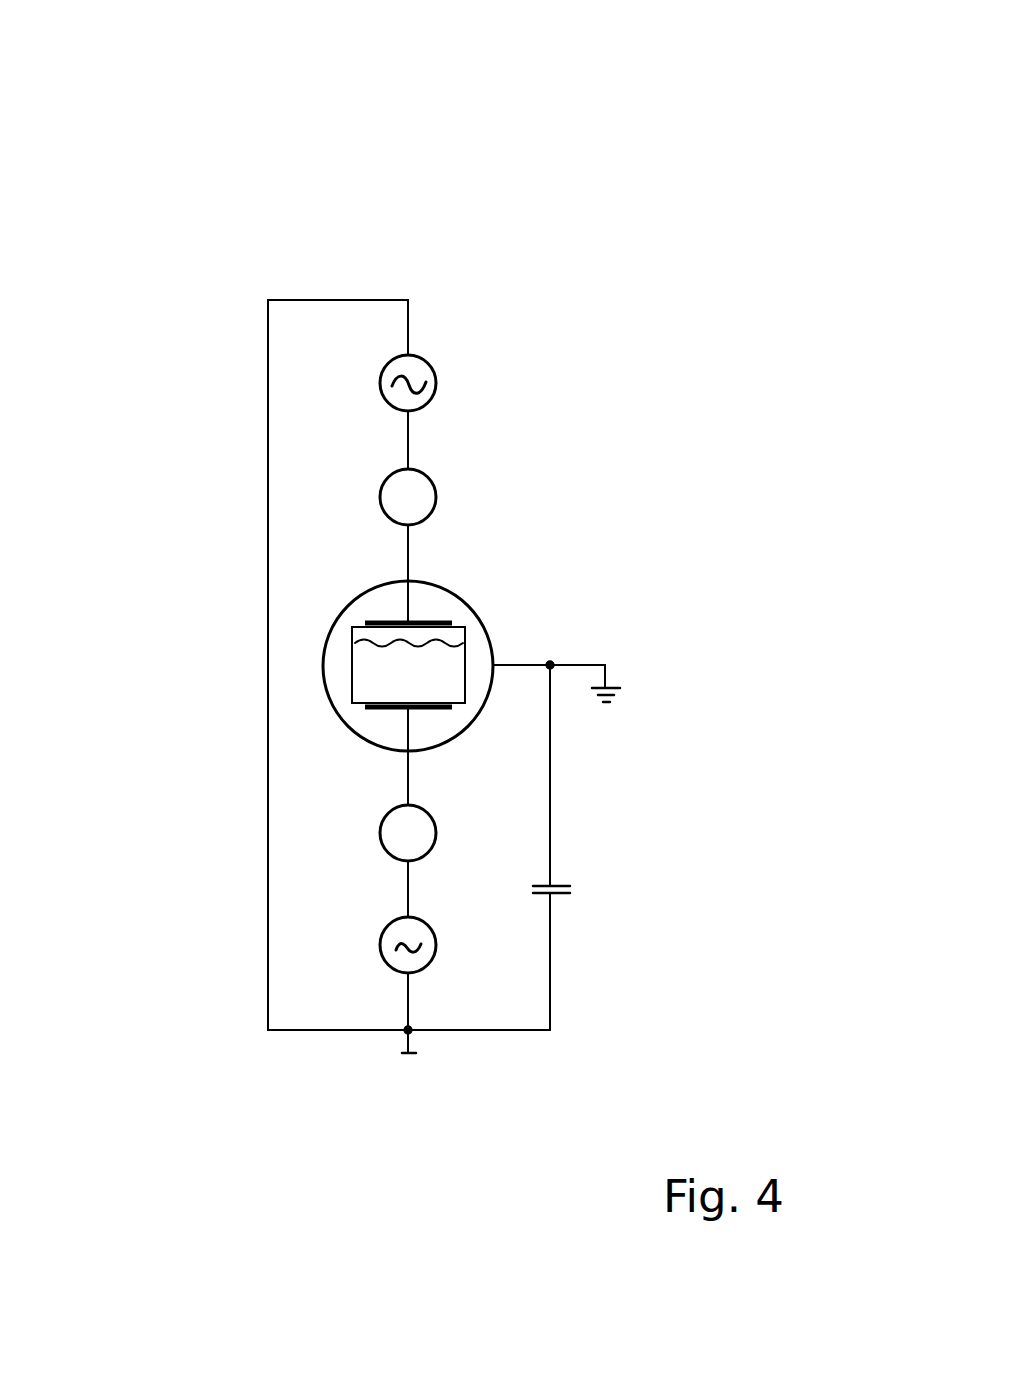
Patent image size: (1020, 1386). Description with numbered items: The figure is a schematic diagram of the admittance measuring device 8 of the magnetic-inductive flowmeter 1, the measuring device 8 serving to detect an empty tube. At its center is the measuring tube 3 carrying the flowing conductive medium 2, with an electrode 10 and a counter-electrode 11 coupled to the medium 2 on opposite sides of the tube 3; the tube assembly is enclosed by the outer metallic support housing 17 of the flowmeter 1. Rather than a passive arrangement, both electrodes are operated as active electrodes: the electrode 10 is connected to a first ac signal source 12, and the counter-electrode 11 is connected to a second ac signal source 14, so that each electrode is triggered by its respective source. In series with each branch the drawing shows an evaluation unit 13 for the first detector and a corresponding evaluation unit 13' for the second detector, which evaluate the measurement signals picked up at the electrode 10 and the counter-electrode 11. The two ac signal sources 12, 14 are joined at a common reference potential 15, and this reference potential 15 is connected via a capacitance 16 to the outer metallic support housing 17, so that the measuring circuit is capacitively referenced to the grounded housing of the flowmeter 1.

The magnetic-inductive flowmeter 1 is at (670, 100).
The measuring device 8 is at (180, 287).
The first ac signal source 12 is at (435, 383).
The evaluation unit 13 is at (558, 497).
The second ammeter 13' is at (258, 833).
The outer metallic support housing 17 is at (458, 592).
The measuring tube 3 is at (467, 633).
The electrode 10 is at (388, 622).
The conductive medium 2 is at (380, 672).
The counter-electrode 11 is at (388, 708).
The second ac signal source 14 is at (380, 945).
The capacitance 16 is at (592, 888).
The common reference potential 15 is at (405, 1056).